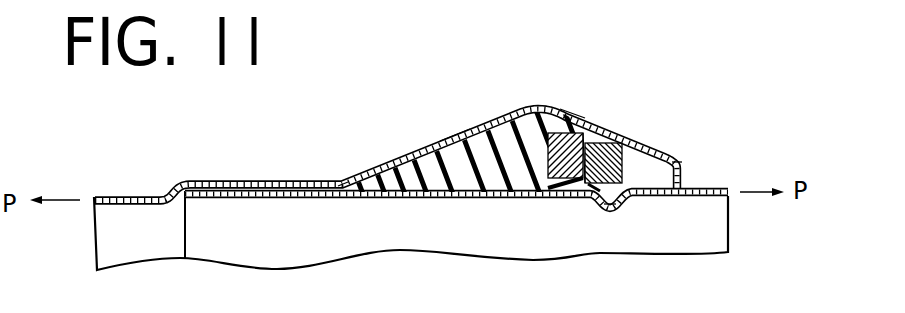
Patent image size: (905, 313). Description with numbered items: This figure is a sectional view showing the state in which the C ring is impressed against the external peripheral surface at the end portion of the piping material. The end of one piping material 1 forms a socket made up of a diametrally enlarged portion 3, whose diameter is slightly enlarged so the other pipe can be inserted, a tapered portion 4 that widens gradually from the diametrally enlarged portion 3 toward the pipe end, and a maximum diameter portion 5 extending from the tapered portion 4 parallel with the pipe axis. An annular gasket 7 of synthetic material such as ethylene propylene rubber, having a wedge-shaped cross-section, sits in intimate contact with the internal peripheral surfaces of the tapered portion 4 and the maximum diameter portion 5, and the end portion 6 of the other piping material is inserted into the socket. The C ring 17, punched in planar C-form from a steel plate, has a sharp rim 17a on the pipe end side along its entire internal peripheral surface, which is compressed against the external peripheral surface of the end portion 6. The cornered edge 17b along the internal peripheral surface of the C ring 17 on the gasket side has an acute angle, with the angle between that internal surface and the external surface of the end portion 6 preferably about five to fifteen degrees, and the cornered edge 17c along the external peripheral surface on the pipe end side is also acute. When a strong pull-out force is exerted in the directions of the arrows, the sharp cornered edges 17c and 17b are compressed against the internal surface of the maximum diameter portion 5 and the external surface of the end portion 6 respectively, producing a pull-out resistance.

The piping material 1 is at (130, 196).
The diametrally enlarged portion 3 is at (248, 181).
The tapered portion 4 is at (465, 127).
The maximum diameter portion 5 is at (573, 108).
The end portion 6 is at (352, 181).
The annular gasket 7 is at (426, 172).
The C ring 17 is at (523, 114).
The sharp rim 17a is at (626, 191).
The cornered edge 17b is at (589, 192).
The cornered edge 17c is at (617, 150).